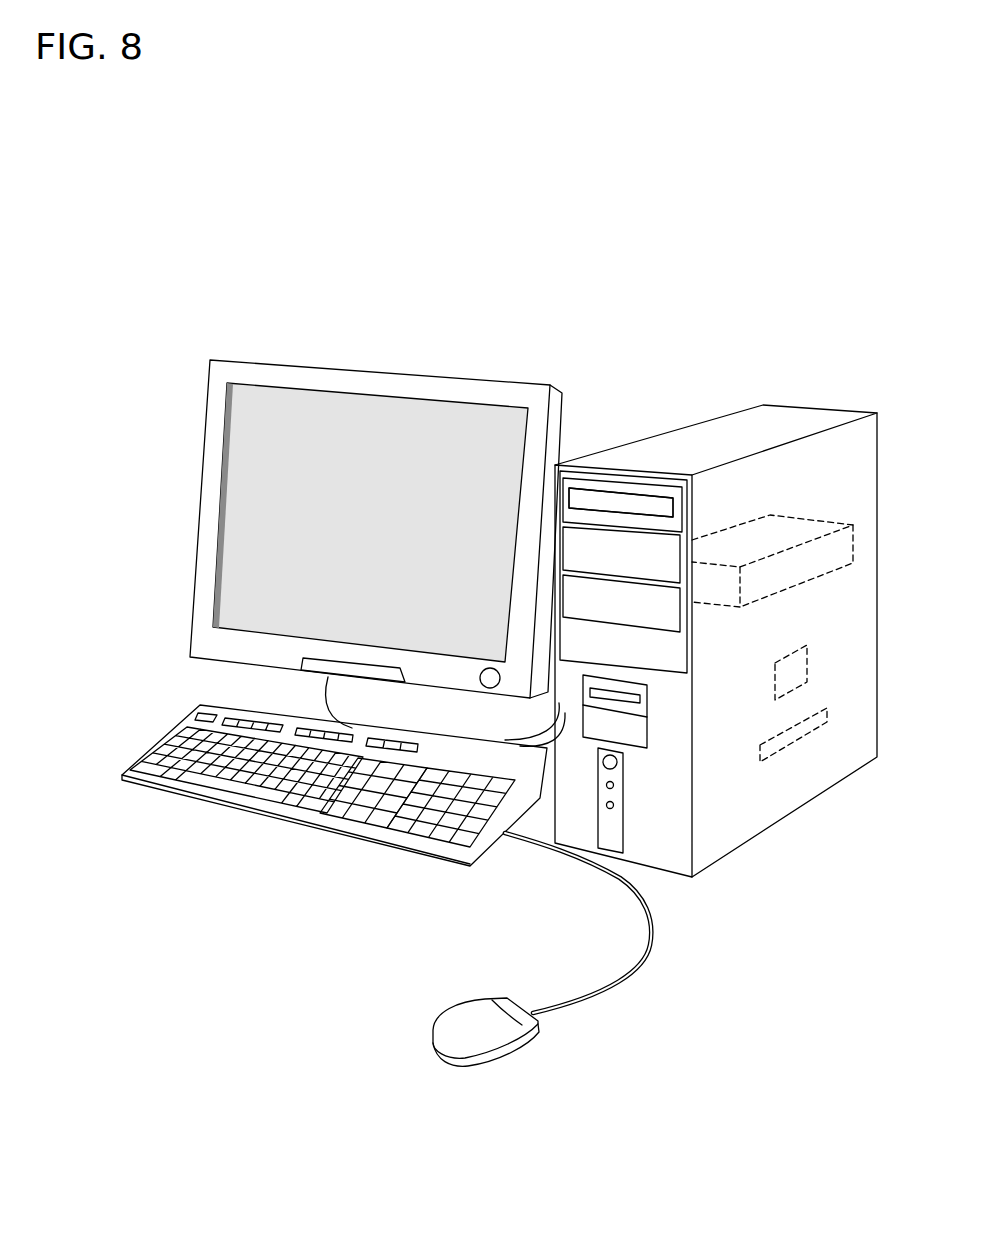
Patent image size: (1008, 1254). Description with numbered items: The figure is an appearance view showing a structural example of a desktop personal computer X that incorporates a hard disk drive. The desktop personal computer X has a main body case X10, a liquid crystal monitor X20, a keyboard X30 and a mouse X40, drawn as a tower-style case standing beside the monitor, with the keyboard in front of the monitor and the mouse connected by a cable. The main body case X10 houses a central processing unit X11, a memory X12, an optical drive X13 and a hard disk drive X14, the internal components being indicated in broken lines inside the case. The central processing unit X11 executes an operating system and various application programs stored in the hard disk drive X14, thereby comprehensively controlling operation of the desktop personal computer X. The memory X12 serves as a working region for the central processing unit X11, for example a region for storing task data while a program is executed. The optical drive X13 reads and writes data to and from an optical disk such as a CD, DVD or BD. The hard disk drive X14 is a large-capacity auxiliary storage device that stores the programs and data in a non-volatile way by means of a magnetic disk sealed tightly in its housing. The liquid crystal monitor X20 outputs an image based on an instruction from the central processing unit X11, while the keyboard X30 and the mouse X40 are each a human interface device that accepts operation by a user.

The desktop personal computer X is at (137, 316).
The main body case X10 is at (709, 430).
The central processing unit X11 is at (793, 661).
The memory X12 is at (796, 735).
The optical drive X13 is at (670, 507).
The hard disk drive X14 is at (778, 528).
The liquid crystal monitor X20 is at (386, 382).
The keyboard X30 is at (268, 813).
The mouse X40 is at (473, 1018).